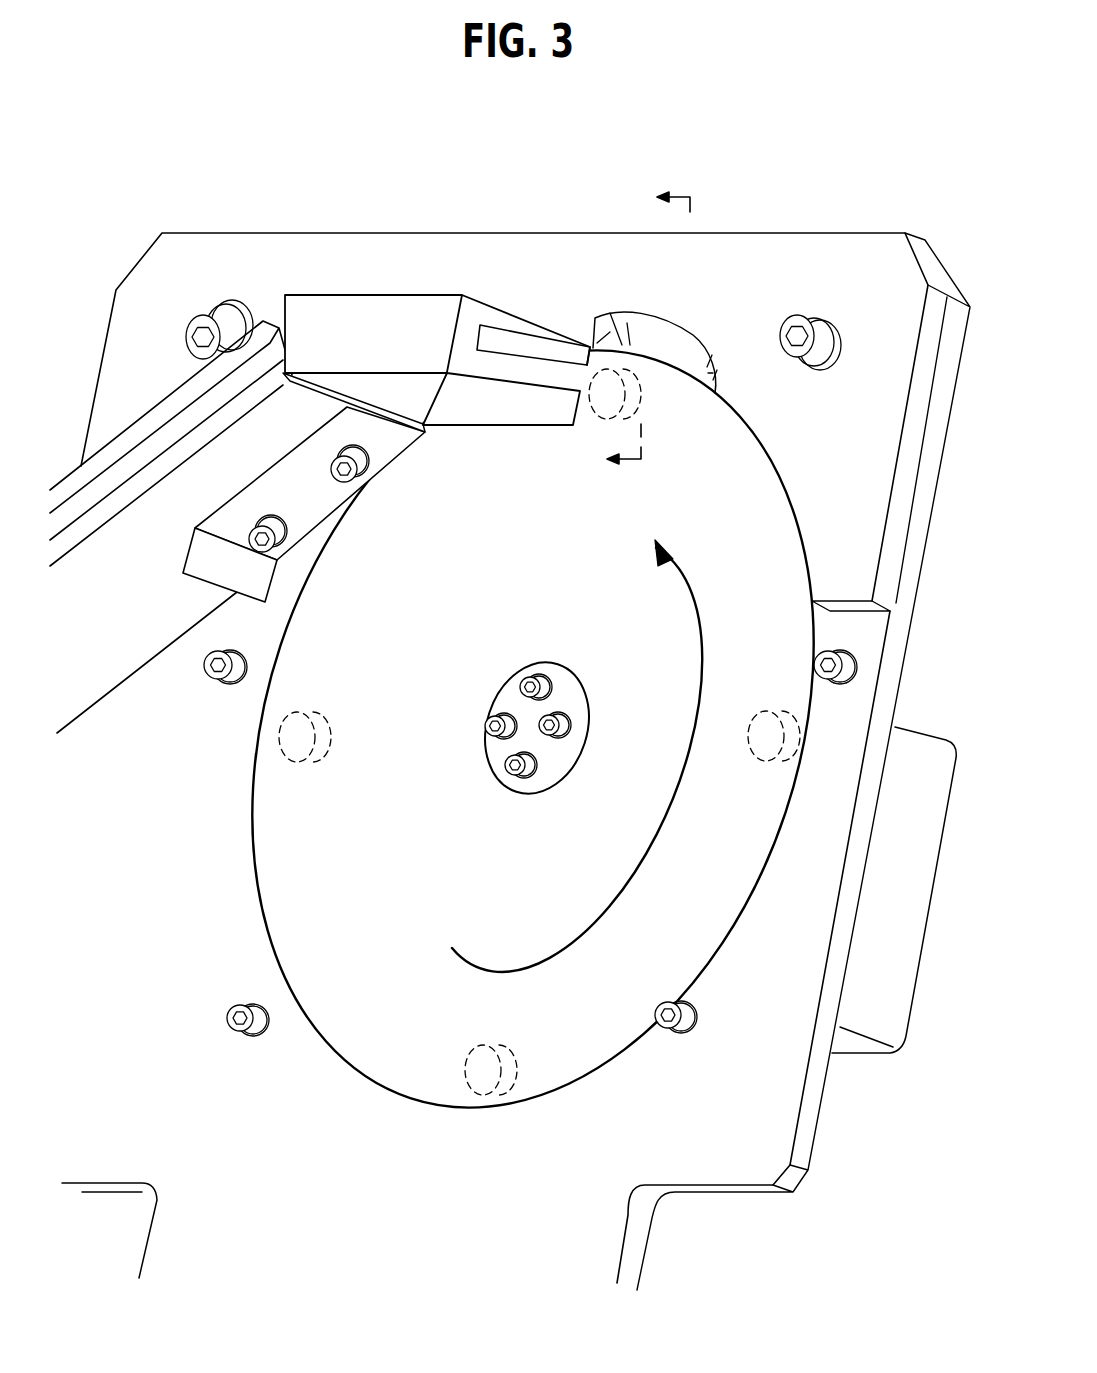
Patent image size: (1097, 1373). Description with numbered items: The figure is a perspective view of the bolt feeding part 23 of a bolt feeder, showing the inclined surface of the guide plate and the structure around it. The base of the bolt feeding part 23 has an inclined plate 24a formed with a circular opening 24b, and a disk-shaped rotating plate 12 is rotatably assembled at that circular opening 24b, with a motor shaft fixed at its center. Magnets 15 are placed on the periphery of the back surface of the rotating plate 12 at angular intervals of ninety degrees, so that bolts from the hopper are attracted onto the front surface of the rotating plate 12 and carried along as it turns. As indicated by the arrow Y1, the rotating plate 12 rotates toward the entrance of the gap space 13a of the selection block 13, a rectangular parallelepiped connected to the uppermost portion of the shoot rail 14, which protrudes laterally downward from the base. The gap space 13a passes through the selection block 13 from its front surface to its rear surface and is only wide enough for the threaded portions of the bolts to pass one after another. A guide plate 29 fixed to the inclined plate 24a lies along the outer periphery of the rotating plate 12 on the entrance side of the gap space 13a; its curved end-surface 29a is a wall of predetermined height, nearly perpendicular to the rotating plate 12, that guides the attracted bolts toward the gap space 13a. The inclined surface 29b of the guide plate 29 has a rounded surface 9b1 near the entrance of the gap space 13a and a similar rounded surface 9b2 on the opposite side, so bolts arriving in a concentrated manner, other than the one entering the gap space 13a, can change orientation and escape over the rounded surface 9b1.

The bolt feeding part 23 is at (492, 163).
The guide plate 29 is at (827, 266).
The curved end-surface 29a is at (784, 506).
The inclined surface 29b is at (675, 343).
The rotating plate 12 is at (368, 1032).
The arrow Y1 is at (653, 845).
The rounded surface 9b1 is at (600, 325).
The rounded surface 9b2 is at (713, 355).
The magnets 15 is at (643, 407).
The shoot rail 14 is at (140, 432).
The selection block 13 is at (376, 312).
The gap space 13a is at (513, 345).
The inclined plate 24a is at (725, 1108).
The circular opening 24b is at (565, 1068).